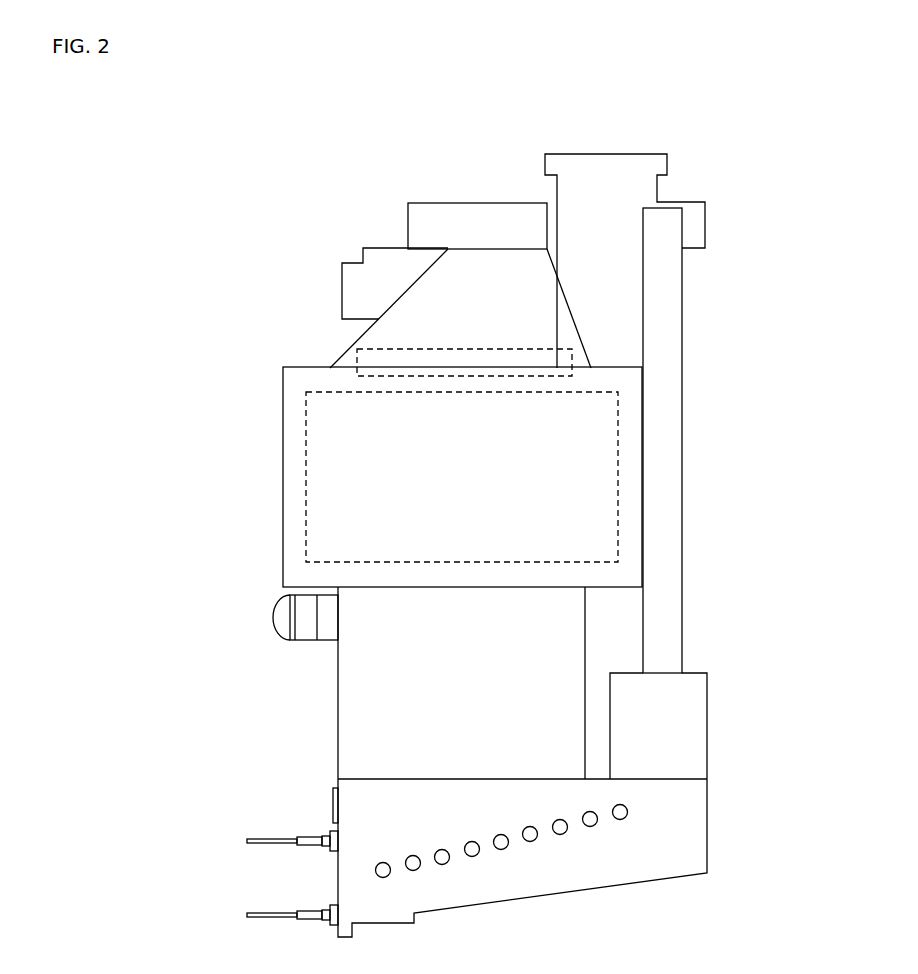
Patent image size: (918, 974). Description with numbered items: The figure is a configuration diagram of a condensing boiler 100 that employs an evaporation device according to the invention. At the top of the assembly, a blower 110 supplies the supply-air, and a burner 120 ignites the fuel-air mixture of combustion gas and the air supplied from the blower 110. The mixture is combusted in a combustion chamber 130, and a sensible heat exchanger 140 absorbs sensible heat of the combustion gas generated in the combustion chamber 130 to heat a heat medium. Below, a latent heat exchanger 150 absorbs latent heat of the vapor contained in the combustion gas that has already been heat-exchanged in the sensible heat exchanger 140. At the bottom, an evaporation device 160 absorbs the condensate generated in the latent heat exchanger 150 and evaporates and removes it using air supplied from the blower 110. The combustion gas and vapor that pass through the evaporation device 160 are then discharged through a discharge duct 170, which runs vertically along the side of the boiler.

The condensing boiler 100 is at (305, 123).
The blower 110 is at (479, 218).
The burner 120 is at (435, 358).
The combustion chamber 130 is at (467, 467).
The sensible heat exchanger 140 is at (275, 540).
The latent heat exchanger 150 is at (323, 694).
The evaporation device 160 is at (307, 884).
The discharge duct 170 is at (667, 523).